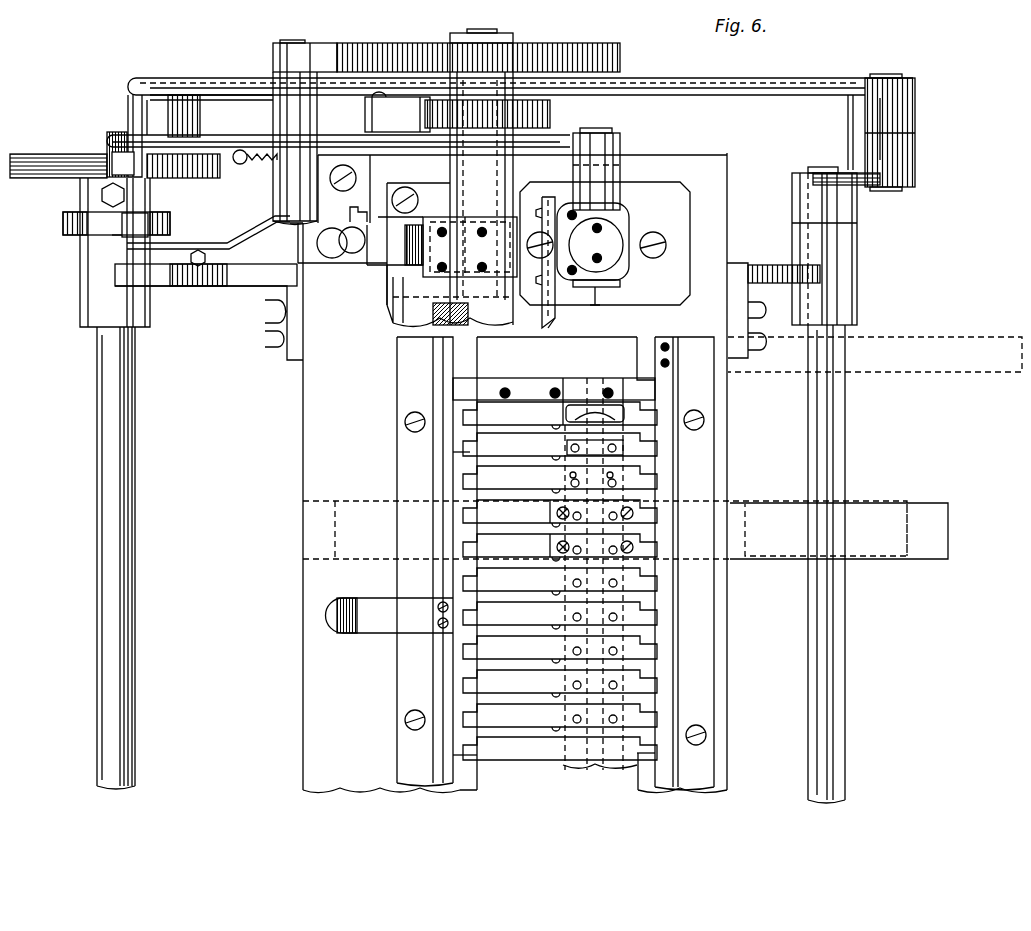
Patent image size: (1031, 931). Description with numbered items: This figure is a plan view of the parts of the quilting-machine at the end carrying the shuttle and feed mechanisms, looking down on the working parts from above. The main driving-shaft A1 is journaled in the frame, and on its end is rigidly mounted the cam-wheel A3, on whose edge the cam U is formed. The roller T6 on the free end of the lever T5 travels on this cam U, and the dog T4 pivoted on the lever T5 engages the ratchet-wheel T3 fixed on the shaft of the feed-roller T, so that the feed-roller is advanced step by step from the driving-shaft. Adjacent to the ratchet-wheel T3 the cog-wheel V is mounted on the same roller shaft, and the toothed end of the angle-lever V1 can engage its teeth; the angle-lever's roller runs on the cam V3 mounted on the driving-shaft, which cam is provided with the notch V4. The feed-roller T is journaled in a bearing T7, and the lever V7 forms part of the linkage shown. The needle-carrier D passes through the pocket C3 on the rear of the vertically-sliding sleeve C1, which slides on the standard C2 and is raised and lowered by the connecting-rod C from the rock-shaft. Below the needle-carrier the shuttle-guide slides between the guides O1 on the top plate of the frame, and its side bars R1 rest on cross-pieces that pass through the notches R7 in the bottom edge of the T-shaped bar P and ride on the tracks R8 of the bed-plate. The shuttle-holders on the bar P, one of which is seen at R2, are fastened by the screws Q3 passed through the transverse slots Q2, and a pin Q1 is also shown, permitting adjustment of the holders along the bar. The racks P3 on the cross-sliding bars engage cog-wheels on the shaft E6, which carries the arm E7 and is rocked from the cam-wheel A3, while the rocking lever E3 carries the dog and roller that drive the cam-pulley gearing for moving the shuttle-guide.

The cog-wheel V is at (423, 43).
The angle-lever V1 is at (305, 132).
The cam V3 is at (102, 222).
The notch V4 is at (115, 239).
The lever V7 is at (208, 235).
The rocking lever E3 is at (521, 123).
The arm E7 is at (836, 226).
The shaft E6 is at (875, 564).
The feed-roller T is at (453, 190).
The ratchet-wheel T3 is at (502, 114).
The dog T4 is at (397, 112).
The lever T5 is at (338, 139).
The roller T6 is at (163, 155).
The block T7 is at (452, 270).
The driving-shaft A1 is at (129, 558).
The cam-wheel A3 is at (80, 154).
The cam U is at (191, 268).
The connecting-rods C is at (604, 164).
The vertically-sliding sleeves C1 is at (628, 228).
The standards C2 is at (596, 243).
The pocket C3 is at (545, 288).
The needle-carrier D is at (552, 320).
The guides O1 is at (555, 563).
The T-shaped bar P is at (548, 650).
The racks P3 is at (625, 530).
The pin Q1 is at (571, 482).
The slots Q2 is at (612, 482).
The screws Q3 is at (567, 448).
The side bars R1 is at (455, 452).
The rack R2 is at (560, 585).
The notches R7 is at (640, 768).
The tracks R8 is at (478, 770).